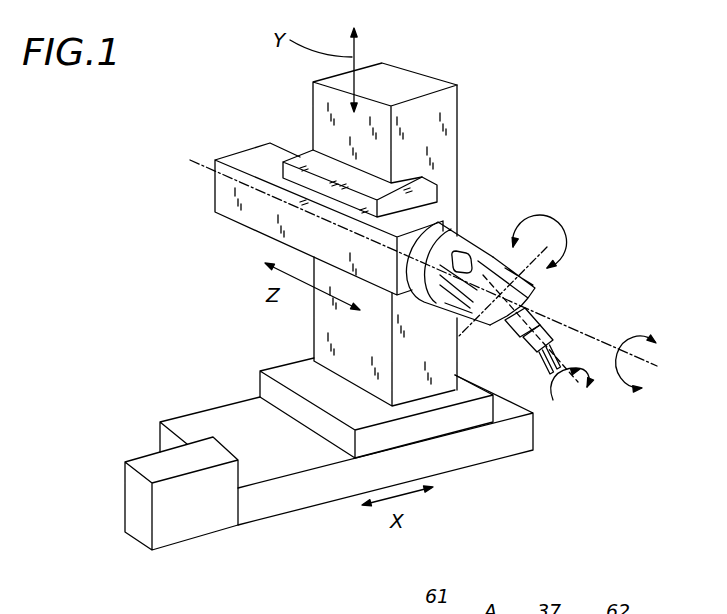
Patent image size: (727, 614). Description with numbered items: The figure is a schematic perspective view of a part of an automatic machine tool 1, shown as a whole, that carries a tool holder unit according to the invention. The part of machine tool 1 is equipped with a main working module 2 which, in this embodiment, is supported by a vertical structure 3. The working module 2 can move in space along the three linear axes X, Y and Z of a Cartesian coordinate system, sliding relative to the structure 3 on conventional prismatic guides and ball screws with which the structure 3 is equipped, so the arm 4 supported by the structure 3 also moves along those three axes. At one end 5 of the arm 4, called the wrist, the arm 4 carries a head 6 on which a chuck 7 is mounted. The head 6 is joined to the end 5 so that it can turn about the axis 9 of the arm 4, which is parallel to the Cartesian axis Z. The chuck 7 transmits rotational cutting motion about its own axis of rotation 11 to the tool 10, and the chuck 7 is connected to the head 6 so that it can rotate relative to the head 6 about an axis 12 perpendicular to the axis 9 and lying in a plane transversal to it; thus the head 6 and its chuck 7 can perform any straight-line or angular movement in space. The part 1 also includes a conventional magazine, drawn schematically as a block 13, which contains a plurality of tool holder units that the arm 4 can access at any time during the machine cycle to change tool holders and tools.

The part of an automatic machine tool 1 is at (458, 65).
The main working module 2 is at (453, 222).
The vertical structure 3 is at (458, 102).
The arm 4 is at (260, 158).
The end of the arm (wrist) 5 is at (447, 218).
The chuck mounting head 6 is at (490, 248).
The chuck 7 is at (540, 305).
The axis of the arm 9 is at (215, 176).
The tool 10 is at (538, 372).
The axis of rotation 11 is at (588, 383).
The axis 12 is at (540, 245).
The magazine (block) 13 is at (188, 508).